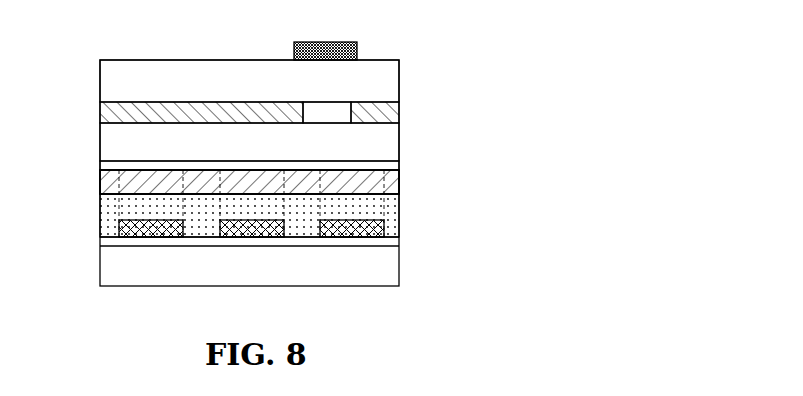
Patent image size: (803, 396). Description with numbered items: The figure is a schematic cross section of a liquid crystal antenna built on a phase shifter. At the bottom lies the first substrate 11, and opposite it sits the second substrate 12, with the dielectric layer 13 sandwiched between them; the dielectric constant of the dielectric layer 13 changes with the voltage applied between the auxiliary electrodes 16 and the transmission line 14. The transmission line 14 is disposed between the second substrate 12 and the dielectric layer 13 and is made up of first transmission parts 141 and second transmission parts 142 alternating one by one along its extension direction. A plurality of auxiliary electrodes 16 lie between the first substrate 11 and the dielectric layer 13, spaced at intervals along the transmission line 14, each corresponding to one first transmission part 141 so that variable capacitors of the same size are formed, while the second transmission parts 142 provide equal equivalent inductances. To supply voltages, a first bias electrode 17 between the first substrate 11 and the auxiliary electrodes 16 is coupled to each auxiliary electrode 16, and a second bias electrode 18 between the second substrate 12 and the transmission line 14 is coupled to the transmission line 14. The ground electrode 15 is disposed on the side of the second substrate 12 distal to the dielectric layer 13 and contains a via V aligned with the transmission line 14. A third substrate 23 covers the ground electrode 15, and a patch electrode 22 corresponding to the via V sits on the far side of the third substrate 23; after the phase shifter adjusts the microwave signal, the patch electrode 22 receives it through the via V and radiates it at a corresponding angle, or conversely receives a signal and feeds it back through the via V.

The first substrate 11 is at (399, 263).
The second substrate 12 is at (399, 143).
The dielectric layer 13 is at (399, 217).
The transmission line 14 is at (399, 187).
The first transmission part 141 is at (125, 180).
The second transmission part 142 is at (195, 183).
The ground electrode 15 is at (102, 112).
The auxiliary electrode 16 is at (123, 228).
The first bias electrode 17 is at (100, 242).
The second bias electrode 18 is at (399, 167).
The patch electrode 22 is at (347, 43).
The third substrate 23 is at (173, 60).
The via V is at (338, 110).